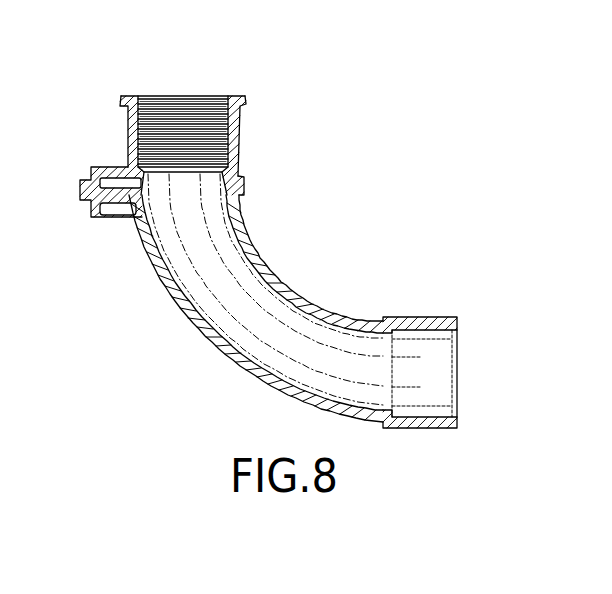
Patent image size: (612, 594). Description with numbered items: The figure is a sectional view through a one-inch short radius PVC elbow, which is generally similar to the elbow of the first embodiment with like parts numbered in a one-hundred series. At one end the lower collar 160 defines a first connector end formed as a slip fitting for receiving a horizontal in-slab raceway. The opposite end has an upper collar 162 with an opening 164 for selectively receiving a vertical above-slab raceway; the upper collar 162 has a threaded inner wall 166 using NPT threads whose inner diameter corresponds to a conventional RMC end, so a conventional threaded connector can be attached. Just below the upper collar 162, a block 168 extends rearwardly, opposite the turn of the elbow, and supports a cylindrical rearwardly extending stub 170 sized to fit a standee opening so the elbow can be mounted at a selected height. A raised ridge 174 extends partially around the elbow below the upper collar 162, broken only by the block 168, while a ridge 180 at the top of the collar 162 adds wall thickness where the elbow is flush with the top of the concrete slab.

The lower collar 160 is at (432, 322).
The upper collar 162 is at (240, 141).
The opening 164 is at (192, 89).
The threaded inner wall 166 is at (165, 108).
The block 168 is at (121, 218).
The stub 170 is at (81, 188).
The ridge 174 is at (245, 193).
The ridge 180 is at (250, 104).